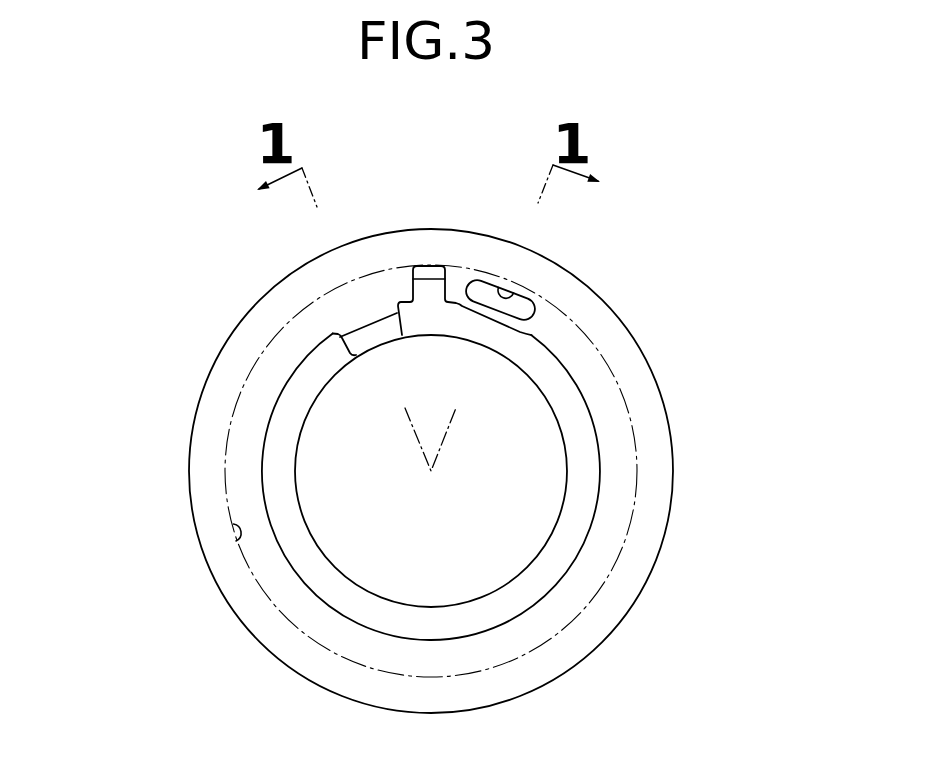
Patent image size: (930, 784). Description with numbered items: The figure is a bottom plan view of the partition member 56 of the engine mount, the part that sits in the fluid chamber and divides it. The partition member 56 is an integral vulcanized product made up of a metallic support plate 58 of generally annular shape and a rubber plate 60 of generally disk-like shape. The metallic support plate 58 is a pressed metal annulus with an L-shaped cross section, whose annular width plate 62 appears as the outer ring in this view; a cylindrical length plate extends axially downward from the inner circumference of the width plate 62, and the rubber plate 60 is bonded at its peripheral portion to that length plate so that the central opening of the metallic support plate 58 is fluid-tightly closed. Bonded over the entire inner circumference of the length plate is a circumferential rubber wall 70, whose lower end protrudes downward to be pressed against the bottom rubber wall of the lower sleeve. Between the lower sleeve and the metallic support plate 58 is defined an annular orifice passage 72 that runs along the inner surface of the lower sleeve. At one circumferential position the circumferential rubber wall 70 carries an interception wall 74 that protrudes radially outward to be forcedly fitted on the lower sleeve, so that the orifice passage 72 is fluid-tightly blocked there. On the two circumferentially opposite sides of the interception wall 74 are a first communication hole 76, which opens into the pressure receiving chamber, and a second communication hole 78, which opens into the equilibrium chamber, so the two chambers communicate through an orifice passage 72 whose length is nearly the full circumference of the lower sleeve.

The partition member 56 is at (463, 218).
The metallic support plate 58 is at (617, 353).
The width plate 62 is at (431, 471).
The rubber plate 60 is at (527, 458).
The circumferential rubber wall 70 is at (543, 575).
The orifice passage 72 is at (238, 545).
The interception wall 74 is at (430, 272).
The first communication hole 76 is at (513, 292).
The second communication hole 78 is at (350, 345).